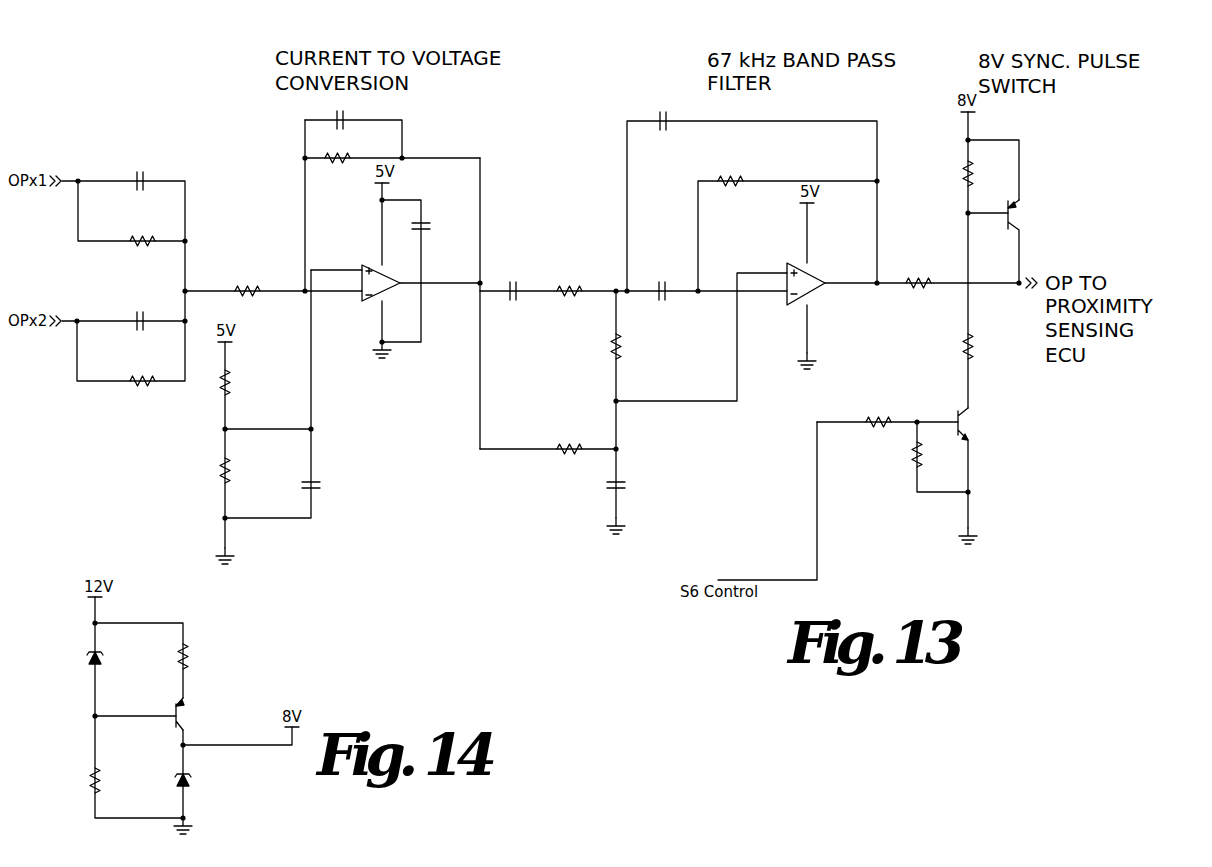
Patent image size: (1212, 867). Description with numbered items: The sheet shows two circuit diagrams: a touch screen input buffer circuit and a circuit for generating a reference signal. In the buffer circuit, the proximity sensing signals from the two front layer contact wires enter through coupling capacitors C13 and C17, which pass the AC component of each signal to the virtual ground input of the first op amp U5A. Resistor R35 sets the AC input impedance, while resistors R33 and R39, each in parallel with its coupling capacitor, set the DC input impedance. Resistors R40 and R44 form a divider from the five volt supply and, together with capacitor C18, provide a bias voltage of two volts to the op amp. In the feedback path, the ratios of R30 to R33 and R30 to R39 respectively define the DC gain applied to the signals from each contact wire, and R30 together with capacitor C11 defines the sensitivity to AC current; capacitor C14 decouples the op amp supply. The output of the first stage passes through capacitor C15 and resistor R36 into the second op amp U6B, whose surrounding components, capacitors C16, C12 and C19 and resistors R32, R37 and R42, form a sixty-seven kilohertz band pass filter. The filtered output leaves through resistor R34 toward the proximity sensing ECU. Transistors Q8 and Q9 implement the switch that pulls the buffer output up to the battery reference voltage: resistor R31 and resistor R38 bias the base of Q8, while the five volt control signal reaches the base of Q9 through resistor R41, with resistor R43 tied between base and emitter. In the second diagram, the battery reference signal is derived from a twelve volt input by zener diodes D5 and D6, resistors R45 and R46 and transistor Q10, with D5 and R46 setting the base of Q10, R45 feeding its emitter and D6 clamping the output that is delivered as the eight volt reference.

In FIG. 13, the coupling capacitor C13 is at (145, 180).
In FIG. 13, the DC input impedance resistor R33 is at (131, 225).
In FIG. 13, the coupling capacitor C17 is at (145, 320).
In FIG. 13, the DC input impedance resistor R39 is at (133, 365).
In FIG. 13, the AC input impedance resistor R35 is at (245, 289).
In FIG. 13, the bias resistor R40 is at (257, 387).
In FIG. 13, the bias resistor R44 is at (254, 477).
In FIG. 13, the bias capacitor C18 is at (349, 494).
In FIG. 13, the op amp U5A is at (360, 298).
In FIG. 13, the feedback capacitor C11 is at (359, 124).
In FIG. 13, the feedback resistor R30 is at (392, 158).
In FIG. 13, the capacitor C14 is at (455, 228).
In FIG. 13, the capacitor C15 is at (529, 293).
In FIG. 13, the resistor R36 is at (587, 293).
In FIG. 13, the capacitor C16 is at (667, 293).
In FIG. 13, the capacitor C12 is at (752, 191).
In FIG. 13, the resistor R32 is at (787, 223).
In FIG. 13, the resistor R37 is at (648, 370).
In FIG. 13, the capacitor C19 is at (655, 483).
In FIG. 13, the resistor R42 is at (548, 452).
In FIG. 13, the op amp U6B is at (829, 281).
In FIG. 13, the output resistor R34 is at (924, 290).
In FIG. 13, the resistor R31 is at (984, 176).
In FIG. 13, the transistor Q8 is at (1044, 240).
In FIG. 13, the resistor R38 is at (985, 346).
In FIG. 13, the transistor Q9 is at (995, 466).
In FIG. 13, the resistor R41 is at (887, 423).
In FIG. 13, the resistor R43 is at (940, 457).
In FIG. 14, the zener diode D5 is at (120, 666).
In FIG. 14, the resistor R45 is at (205, 661).
In FIG. 14, the transistor Q10 is at (210, 717).
In FIG. 14, the resistor R46 is at (111, 783).
In FIG. 14, the zener diode D6 is at (232, 783).